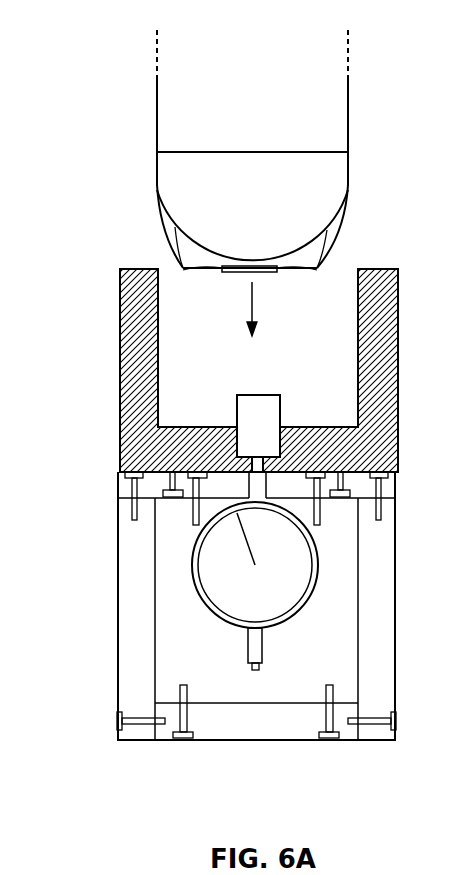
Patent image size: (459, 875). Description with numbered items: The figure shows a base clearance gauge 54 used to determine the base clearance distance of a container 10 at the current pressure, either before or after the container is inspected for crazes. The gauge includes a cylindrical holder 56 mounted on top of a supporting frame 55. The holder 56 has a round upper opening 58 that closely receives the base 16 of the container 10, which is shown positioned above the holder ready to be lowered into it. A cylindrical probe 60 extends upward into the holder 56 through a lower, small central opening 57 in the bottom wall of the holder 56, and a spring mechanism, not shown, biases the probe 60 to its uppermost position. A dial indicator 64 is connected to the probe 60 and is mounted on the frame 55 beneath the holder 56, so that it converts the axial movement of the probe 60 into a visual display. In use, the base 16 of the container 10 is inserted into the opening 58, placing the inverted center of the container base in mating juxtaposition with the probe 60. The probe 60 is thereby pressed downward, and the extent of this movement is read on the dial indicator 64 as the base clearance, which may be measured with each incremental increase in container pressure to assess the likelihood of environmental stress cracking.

The container 10 is at (126, 118).
The base 16 is at (335, 228).
The base clearance gauge 54 is at (398, 307).
The supporting frame 55 is at (383, 590).
The cylindrical holder 56 is at (138, 293).
The small central opening 57 is at (243, 467).
The round upper opening 58 is at (180, 350).
The cylindrical probe 60 is at (267, 407).
The dial indicator 64 is at (240, 605).